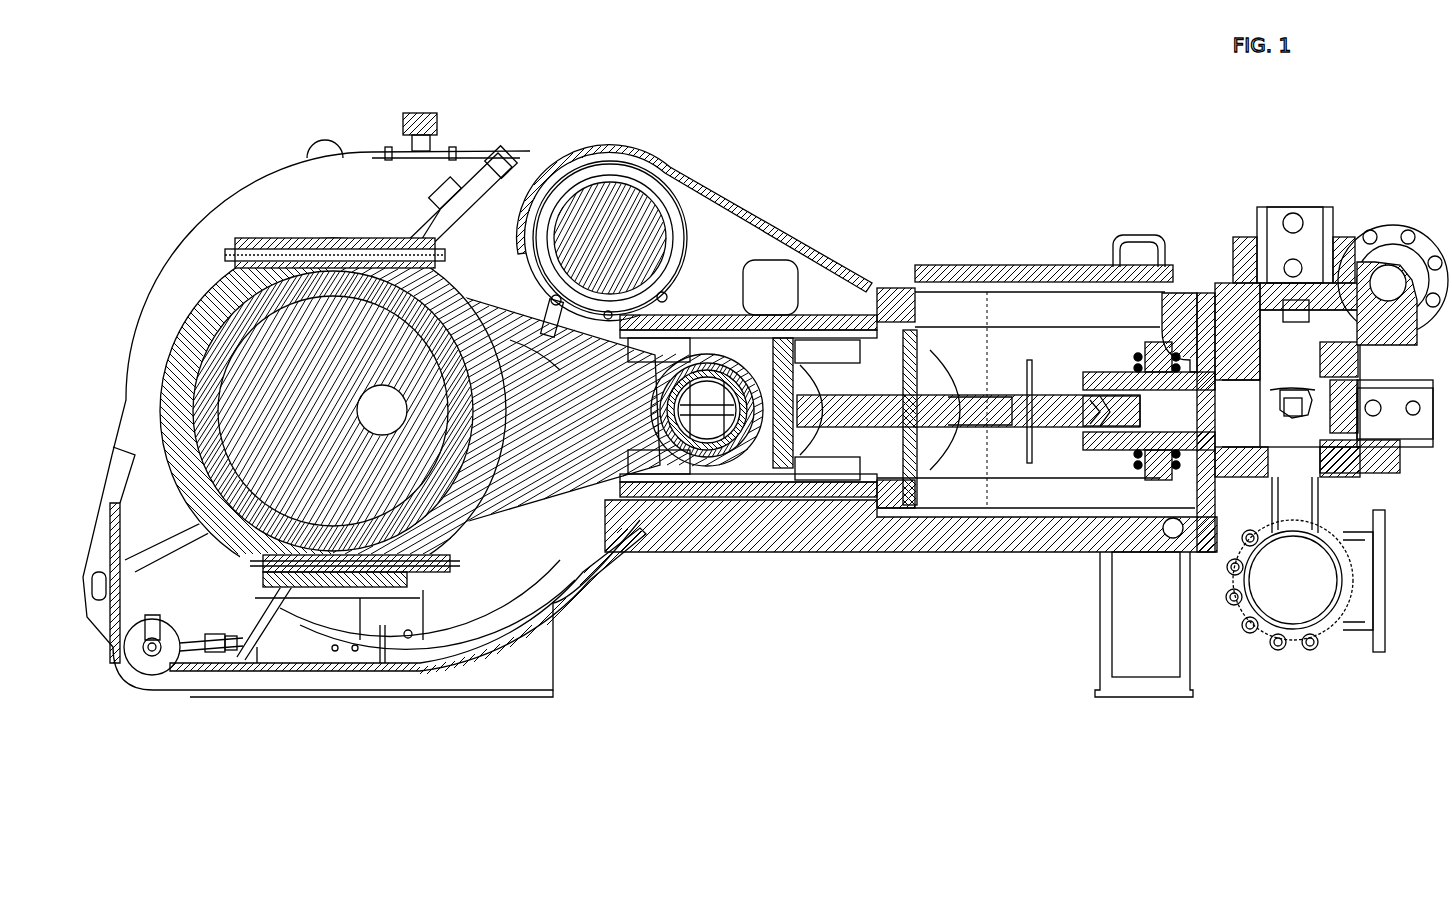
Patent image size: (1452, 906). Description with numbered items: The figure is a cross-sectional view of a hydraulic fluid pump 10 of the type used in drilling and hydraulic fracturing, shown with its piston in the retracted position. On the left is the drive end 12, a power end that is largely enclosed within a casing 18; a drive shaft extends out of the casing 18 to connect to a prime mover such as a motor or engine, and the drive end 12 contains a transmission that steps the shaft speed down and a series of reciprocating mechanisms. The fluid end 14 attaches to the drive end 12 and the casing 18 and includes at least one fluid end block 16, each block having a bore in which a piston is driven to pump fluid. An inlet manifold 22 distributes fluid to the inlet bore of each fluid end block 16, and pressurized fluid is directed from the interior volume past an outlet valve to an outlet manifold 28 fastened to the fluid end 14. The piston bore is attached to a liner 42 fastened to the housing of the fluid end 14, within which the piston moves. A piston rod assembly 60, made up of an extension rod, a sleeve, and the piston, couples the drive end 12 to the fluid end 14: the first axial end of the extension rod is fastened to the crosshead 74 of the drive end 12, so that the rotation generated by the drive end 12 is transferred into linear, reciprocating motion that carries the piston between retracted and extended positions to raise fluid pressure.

The hydraulic fluid pump 10 is at (1088, 162).
The drive end 12 is at (568, 750).
The fluid end 14 is at (1337, 461).
The fluid end block 16 is at (1213, 307).
The casing 18 is at (560, 150).
The inlet manifold 22 is at (1267, 627).
The outlet manifold 28 is at (1392, 212).
The liner 42 is at (1113, 447).
The piston rod assembly 60 is at (1022, 420).
The crosshead 74 is at (793, 437).